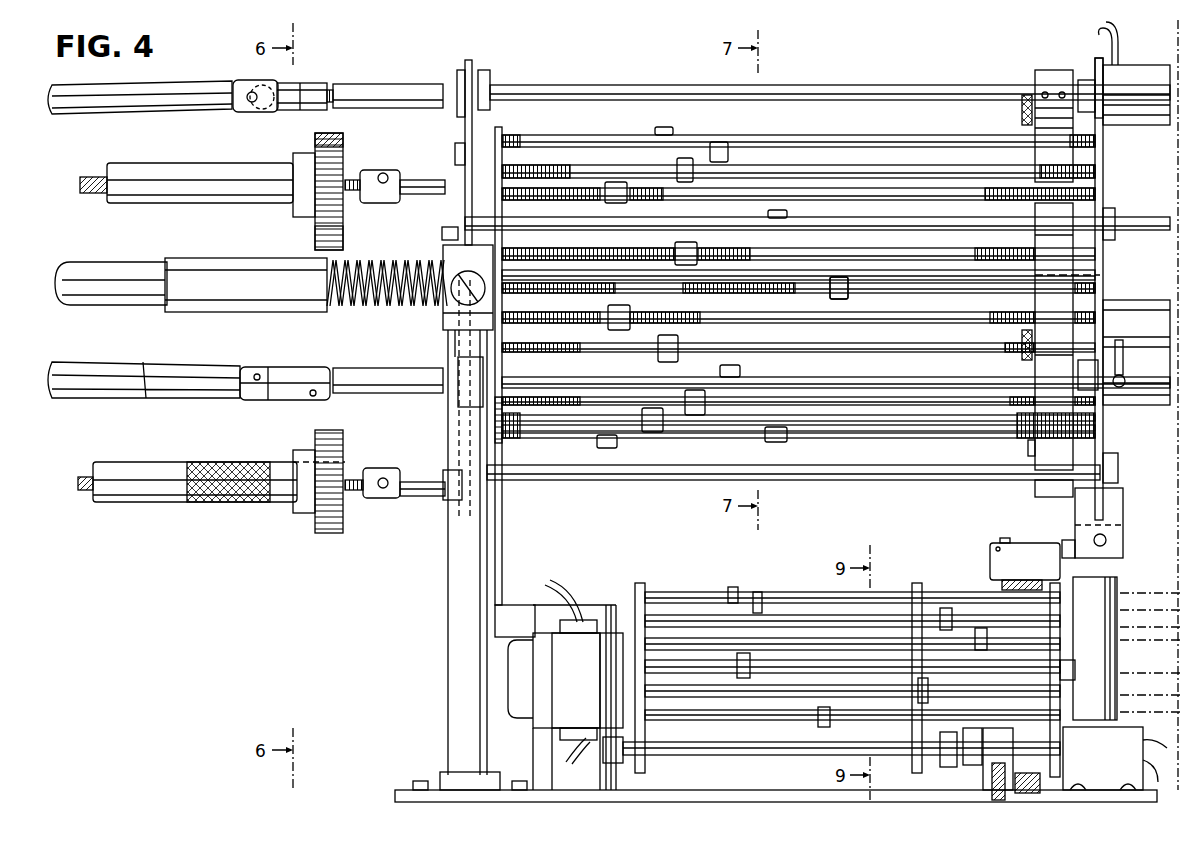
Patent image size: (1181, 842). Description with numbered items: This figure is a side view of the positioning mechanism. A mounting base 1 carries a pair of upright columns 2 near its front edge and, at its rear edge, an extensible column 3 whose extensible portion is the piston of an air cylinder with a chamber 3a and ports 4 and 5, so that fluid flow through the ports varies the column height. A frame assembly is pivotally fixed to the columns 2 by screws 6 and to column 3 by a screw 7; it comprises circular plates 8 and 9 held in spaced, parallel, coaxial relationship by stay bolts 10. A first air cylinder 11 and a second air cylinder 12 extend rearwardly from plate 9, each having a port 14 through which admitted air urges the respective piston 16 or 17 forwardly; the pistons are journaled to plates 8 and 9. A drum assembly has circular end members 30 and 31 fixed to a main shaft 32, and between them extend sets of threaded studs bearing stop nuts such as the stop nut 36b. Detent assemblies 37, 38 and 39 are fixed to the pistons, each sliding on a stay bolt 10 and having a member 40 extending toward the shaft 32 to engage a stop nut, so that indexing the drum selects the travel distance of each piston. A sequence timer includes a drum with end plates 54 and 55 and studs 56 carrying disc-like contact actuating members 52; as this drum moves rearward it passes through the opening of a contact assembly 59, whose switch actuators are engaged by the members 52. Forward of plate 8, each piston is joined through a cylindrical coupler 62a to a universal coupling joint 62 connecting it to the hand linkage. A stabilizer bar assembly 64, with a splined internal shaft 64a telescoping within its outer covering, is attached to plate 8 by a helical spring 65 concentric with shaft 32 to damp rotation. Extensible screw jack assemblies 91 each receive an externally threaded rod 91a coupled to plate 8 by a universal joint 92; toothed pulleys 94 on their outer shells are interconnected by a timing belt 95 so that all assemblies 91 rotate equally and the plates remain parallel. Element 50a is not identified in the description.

The mounting base 1 is at (410, 786).
The upright columns 2 is at (458, 540).
The extensible column 3 is at (1118, 592).
The chamber 3a is at (1112, 762).
The port 4 is at (1166, 748).
The port 5 is at (1162, 781).
The screws 6 is at (447, 318).
The screw 7 is at (1106, 538).
The circular plate 8 is at (472, 67).
The circular plate 9 is at (1095, 68).
The stay bolts 10 is at (455, 152).
The first air cylinder 11 is at (1133, 66).
The second air cylinder 12 is at (1160, 405).
The port 14 is at (1100, 42).
The piston 16 is at (606, 90).
The piston 17 is at (878, 380).
The circular end member 30 is at (502, 130).
The circular end member 31 is at (1103, 205).
The main shaft 32 is at (624, 283).
The stop nut 36b is at (848, 280).
The detent assembly 37 is at (1046, 70).
The detent assembly 38 is at (1062, 328).
The detent assembly 39 is at (1035, 490).
The member 40 is at (1022, 112).
The motor housing 50a is at (590, 760).
The contact actuating members 52 is at (553, 592).
The end plate 54 is at (640, 583).
The studs 56 is at (810, 640).
The end plate 55 is at (1067, 555).
The contact assembly 59 is at (990, 556).
The universal coupling joint 62 is at (292, 81).
The cylindrical coupler 62a is at (385, 86).
The stabilizer bar assembly 64 is at (230, 286).
The splined internal shaft 64a is at (100, 263).
The helical spring 65 is at (374, 258).
The extensible bar assembly 91 is at (172, 170).
The externally threaded rod 91a is at (208, 470).
The universal joint 92 is at (385, 170).
The pulleys 94 is at (315, 142).
The timing belt 95 is at (315, 241).